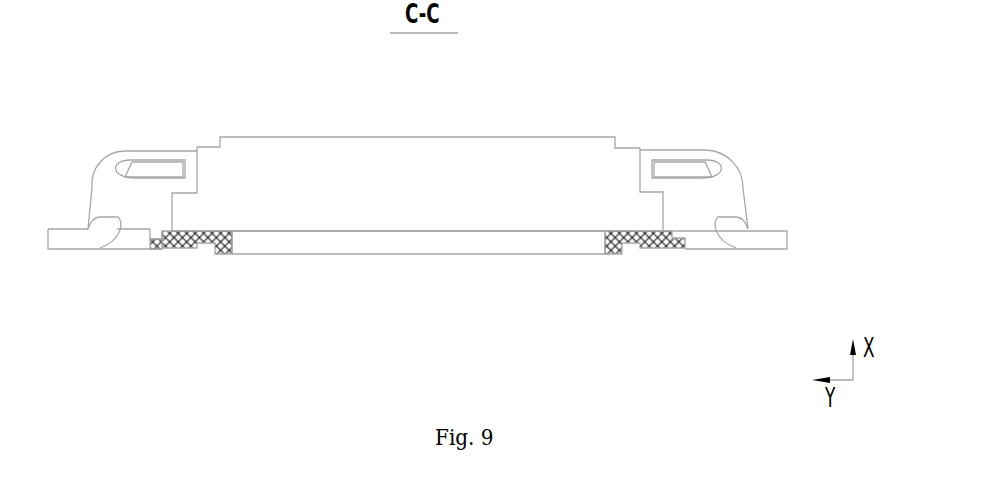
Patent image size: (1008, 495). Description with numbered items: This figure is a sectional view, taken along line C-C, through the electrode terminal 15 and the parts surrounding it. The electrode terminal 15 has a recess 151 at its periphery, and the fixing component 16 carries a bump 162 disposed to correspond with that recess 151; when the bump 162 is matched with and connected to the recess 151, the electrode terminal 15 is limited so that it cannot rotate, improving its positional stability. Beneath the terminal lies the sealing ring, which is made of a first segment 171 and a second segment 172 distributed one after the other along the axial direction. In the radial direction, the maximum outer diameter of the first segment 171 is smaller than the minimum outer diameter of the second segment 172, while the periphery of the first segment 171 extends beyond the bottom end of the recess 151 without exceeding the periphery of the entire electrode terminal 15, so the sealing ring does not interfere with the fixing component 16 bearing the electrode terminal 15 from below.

The electrode terminal 15 is at (410, 182).
The fixing component 16 is at (735, 172).
The bump 162 is at (172, 212).
The first segment 171 is at (676, 243).
The second segment 172 is at (686, 247).
The recess 151 is at (172, 220).